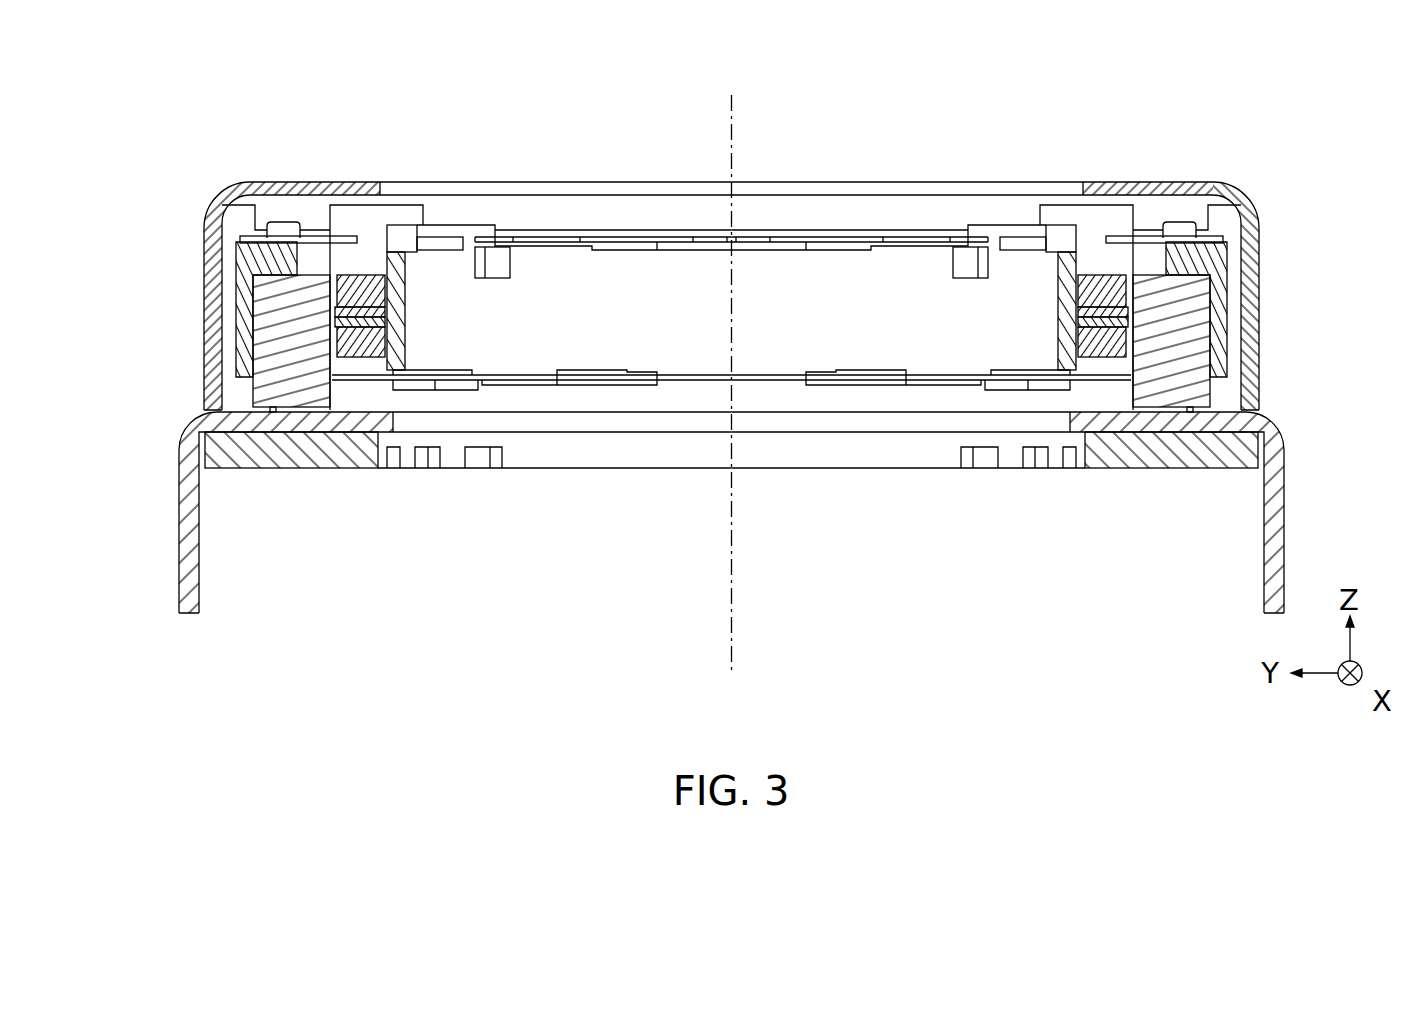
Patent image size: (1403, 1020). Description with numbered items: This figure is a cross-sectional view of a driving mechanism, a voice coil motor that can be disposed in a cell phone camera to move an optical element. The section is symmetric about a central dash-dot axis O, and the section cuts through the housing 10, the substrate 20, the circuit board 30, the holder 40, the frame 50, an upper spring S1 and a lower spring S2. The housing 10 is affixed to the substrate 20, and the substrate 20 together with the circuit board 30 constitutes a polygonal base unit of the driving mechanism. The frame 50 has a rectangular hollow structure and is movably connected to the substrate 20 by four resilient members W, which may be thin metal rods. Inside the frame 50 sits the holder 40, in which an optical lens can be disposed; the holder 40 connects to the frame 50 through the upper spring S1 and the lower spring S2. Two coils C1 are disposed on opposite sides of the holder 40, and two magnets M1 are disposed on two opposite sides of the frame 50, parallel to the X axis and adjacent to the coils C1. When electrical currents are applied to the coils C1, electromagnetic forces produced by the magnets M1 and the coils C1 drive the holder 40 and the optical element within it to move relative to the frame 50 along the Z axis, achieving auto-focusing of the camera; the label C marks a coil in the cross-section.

The housing 10 is at (278, 192).
The substrate 20 is at (318, 445).
The circuit board 30 is at (189, 491).
The holder 40 is at (407, 293).
The frame 50 is at (265, 259).
The magnet M1 is at (287, 344).
The coil C1 is at (362, 273).
The coil C is at (358, 358).
The resilient member W is at (273, 408).
The upper spring S1 is at (616, 240).
The lower spring S2 is at (592, 380).
The optical axis O is at (731, 368).